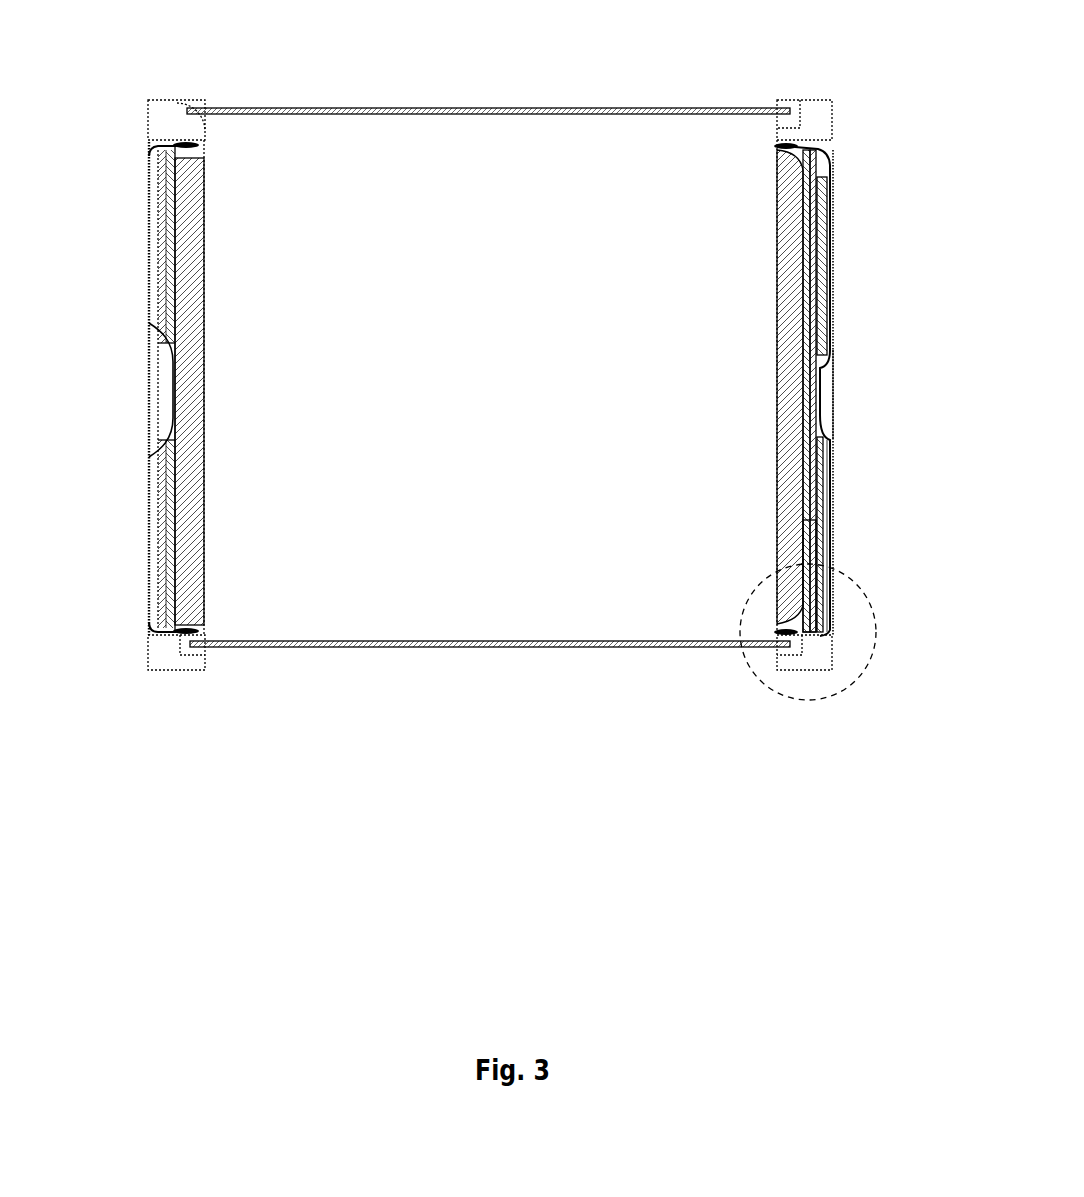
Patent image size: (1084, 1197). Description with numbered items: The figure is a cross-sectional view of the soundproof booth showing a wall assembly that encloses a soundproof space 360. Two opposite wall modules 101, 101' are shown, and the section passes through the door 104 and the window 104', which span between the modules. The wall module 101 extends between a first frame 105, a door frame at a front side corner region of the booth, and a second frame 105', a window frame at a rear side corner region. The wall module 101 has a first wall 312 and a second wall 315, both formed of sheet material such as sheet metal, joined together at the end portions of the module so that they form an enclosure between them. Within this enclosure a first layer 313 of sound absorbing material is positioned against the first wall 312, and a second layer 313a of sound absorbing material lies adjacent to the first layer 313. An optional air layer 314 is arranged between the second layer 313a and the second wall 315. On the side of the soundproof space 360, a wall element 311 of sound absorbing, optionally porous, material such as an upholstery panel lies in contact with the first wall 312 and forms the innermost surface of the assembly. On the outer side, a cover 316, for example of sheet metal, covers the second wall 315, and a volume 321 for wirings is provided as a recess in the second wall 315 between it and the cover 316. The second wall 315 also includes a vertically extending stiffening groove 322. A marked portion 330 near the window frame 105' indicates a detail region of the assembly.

The wall module 101 is at (873, 377).
The wall module 101' is at (108, 388).
The door 104 is at (488, 57).
The window 104' is at (490, 705).
The door frame 105 is at (797, 82).
The window frame 105' is at (788, 702).
The wall element of sound absorbing material 311 is at (778, 232).
The first wall 312 is at (807, 480).
The sound absorbing material layer 313 is at (812, 430).
The sound absorbing material layer 313a is at (807, 533).
The air layer 314 is at (833, 475).
The second wall 315 is at (831, 423).
The cover 316 is at (835, 375).
The volume for wirings and/or electrical components 321 is at (828, 368).
The stiffening groove 322 is at (832, 265).
The marked portion 330 is at (862, 588).
The soundproof space 360 is at (520, 363).